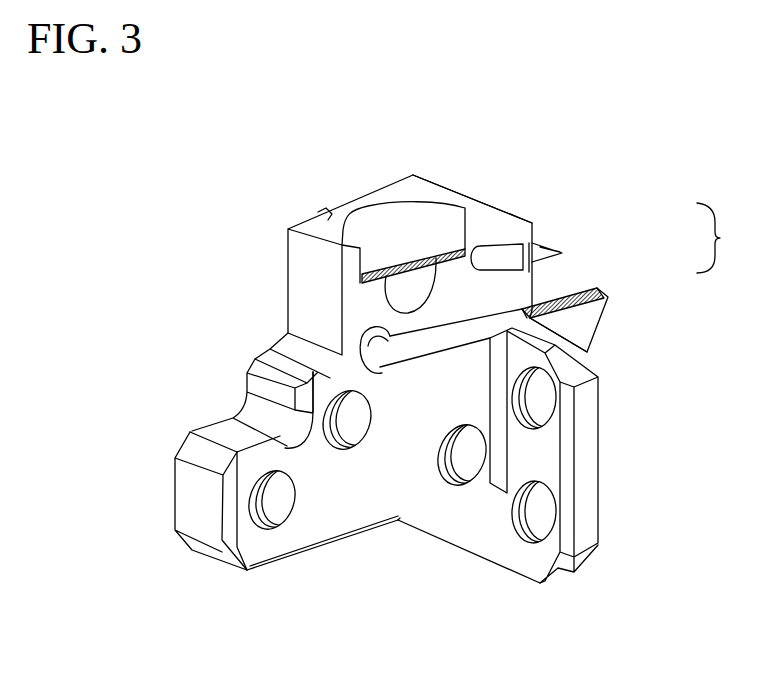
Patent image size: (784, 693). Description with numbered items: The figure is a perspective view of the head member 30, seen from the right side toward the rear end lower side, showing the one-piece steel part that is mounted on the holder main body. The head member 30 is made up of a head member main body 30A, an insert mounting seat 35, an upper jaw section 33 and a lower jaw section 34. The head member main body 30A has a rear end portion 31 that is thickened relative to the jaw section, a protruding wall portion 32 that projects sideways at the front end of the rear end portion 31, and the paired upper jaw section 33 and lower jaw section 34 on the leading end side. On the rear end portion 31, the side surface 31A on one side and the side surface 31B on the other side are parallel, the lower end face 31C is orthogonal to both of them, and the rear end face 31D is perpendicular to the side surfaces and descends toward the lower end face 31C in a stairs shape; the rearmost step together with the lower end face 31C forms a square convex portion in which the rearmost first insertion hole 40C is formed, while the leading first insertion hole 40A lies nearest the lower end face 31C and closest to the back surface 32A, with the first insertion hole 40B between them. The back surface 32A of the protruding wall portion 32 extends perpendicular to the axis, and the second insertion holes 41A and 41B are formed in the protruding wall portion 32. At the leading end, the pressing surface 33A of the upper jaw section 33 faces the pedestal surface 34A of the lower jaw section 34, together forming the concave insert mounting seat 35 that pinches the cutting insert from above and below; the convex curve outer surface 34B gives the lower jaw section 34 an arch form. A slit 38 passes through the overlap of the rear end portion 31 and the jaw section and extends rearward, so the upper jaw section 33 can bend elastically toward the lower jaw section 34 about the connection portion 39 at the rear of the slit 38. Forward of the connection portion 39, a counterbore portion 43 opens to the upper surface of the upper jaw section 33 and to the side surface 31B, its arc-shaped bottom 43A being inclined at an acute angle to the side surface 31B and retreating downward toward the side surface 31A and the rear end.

The head member 30 is at (408, 389).
The head member main body 30A is at (500, 207).
The rear end portion 31 is at (284, 496).
The side surface on one side 31A is at (225, 435).
The side surface on the other side 31B is at (402, 521).
The lower end face 31C is at (283, 563).
The rear end face 31D is at (187, 498).
The protruding wall portion 32 is at (547, 499).
The back surface 32A is at (507, 557).
The upper jaw section 33 is at (584, 211).
The pressing surface 33A is at (563, 253).
The lower jaw section 34 is at (617, 310).
The pedestal surface 34A is at (593, 282).
The convex curve outer surface 34B is at (588, 341).
The insert mounting seat 35 is at (725, 238).
The slit 38 is at (412, 350).
The connection portion 39 is at (352, 356).
The first insertion hole 40A is at (463, 478).
The first insertion hole 40B is at (357, 425).
The first insertion hole 40C is at (270, 522).
The second insertion hole 41A is at (540, 392).
The second insertion hole 41B is at (538, 516).
The counterbore portion 43 is at (486, 260).
The bottom of counterbore portion 43A is at (375, 277).